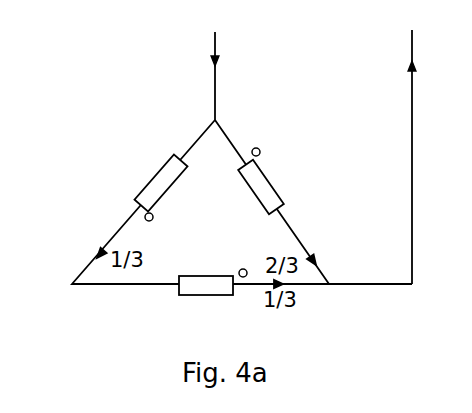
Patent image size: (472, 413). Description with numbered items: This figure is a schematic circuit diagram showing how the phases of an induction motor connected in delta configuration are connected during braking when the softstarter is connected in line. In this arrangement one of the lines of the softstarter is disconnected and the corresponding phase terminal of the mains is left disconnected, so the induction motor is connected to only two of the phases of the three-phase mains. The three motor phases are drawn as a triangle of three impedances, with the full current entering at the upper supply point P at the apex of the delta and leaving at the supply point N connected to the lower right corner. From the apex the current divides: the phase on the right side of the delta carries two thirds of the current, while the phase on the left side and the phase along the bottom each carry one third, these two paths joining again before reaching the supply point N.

The positive supply point P is at (211, 64).
The neutral supply point N is at (420, 146).